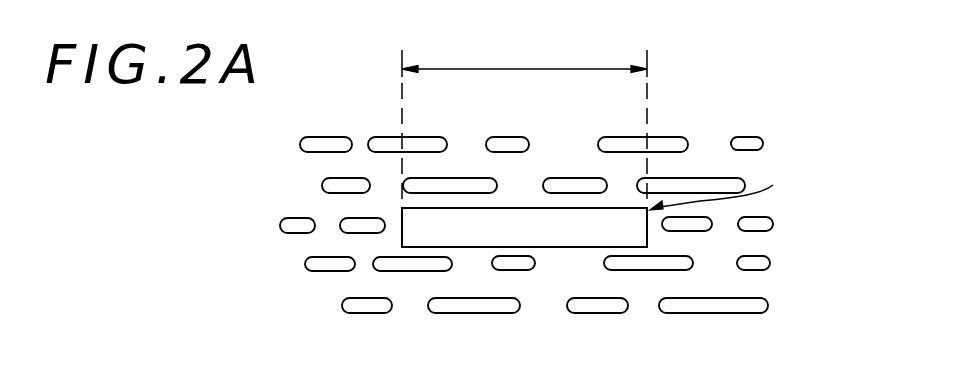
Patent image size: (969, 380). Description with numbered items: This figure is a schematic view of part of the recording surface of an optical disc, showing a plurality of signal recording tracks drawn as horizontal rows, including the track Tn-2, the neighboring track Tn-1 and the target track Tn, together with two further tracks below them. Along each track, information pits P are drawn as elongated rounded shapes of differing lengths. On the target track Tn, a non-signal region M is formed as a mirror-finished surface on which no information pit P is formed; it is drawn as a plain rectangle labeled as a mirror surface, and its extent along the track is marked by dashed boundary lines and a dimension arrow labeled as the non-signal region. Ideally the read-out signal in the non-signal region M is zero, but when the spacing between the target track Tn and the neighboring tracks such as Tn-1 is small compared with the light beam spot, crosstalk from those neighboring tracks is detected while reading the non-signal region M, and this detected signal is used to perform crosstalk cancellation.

The non-signal region M is at (619, 68).
The pit P is at (745, 136).
The signal recording track Tn-2 is at (293, 144).
The neighboring track Tn-1 is at (315, 186).
The target track Tn is at (273, 226).